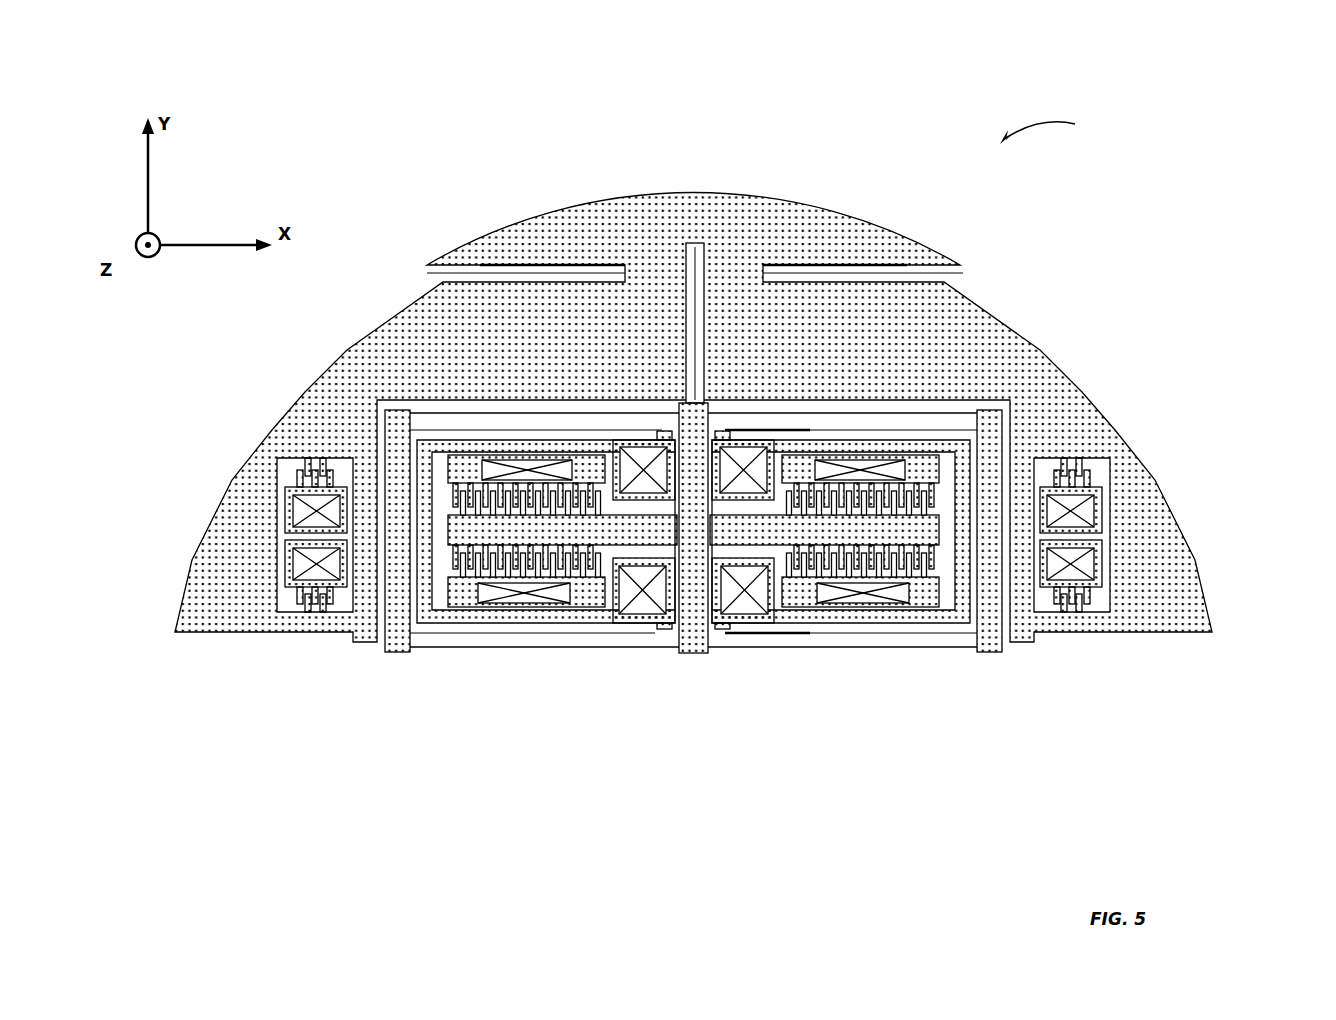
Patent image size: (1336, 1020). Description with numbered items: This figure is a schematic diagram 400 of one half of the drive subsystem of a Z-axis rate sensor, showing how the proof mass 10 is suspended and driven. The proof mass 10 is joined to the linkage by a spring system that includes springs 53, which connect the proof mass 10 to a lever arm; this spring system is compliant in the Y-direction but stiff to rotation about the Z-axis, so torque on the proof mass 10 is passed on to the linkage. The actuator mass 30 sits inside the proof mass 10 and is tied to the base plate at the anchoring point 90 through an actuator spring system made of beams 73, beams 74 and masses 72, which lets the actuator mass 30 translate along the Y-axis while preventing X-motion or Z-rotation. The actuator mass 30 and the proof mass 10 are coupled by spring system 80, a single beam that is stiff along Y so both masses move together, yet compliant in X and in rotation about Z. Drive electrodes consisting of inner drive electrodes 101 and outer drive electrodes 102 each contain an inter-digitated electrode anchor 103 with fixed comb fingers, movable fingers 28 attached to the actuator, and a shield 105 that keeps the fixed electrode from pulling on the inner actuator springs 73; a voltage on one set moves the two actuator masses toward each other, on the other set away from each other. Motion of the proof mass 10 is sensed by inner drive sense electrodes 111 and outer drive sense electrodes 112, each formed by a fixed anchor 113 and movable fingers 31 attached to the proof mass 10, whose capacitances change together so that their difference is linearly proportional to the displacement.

The accelerometer device 400 is at (1059, 129).
The proof mass 10 is at (958, 318).
The spring 53 is at (500, 275).
The spring system 80 is at (690, 297).
The beam 73 is at (428, 632).
The mass 72 is at (988, 635).
The actuator mass 30 is at (662, 535).
The beam 74 is at (750, 413).
The shield 105 is at (485, 618).
The inter-digitated electrode anchor 103 is at (564, 475).
The anchoring point 90 is at (632, 567).
The inner drive electrode 101 is at (868, 563).
The outer drive electrode 102 is at (873, 497).
The movable fingers 28 is at (820, 563).
The movable fingers 31 is at (305, 462).
The outer drive sense electrode 112 is at (1090, 470).
The fixed anchor 113 is at (1090, 570).
The inner drive sense electrode 111 is at (1078, 600).